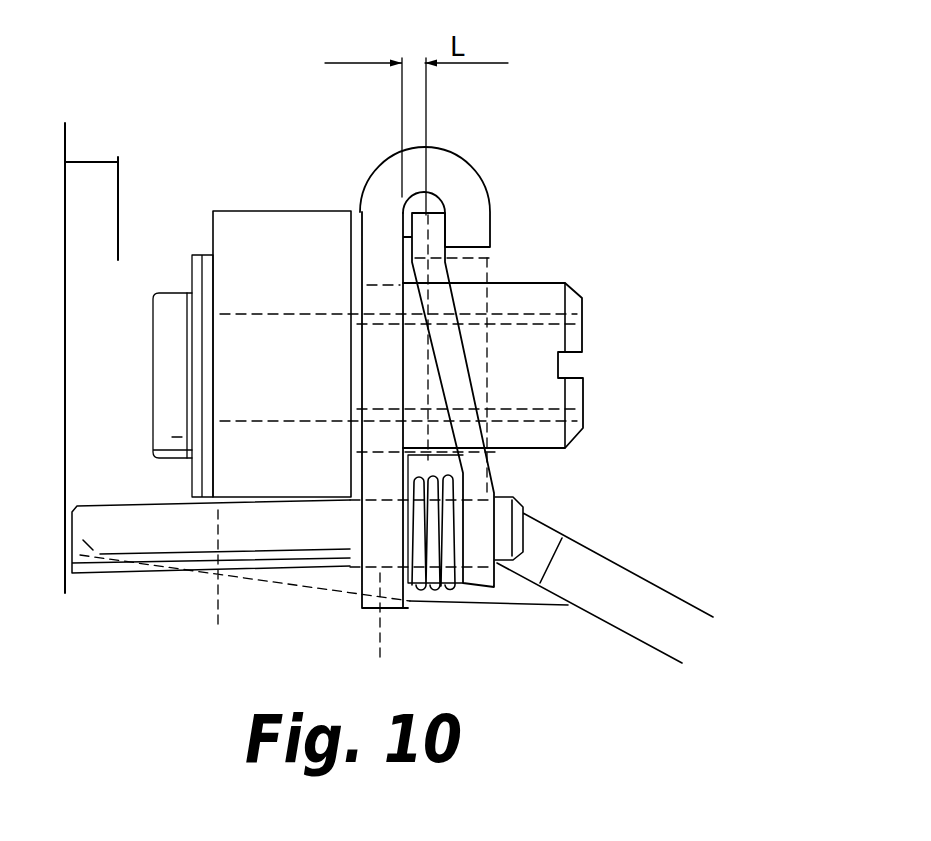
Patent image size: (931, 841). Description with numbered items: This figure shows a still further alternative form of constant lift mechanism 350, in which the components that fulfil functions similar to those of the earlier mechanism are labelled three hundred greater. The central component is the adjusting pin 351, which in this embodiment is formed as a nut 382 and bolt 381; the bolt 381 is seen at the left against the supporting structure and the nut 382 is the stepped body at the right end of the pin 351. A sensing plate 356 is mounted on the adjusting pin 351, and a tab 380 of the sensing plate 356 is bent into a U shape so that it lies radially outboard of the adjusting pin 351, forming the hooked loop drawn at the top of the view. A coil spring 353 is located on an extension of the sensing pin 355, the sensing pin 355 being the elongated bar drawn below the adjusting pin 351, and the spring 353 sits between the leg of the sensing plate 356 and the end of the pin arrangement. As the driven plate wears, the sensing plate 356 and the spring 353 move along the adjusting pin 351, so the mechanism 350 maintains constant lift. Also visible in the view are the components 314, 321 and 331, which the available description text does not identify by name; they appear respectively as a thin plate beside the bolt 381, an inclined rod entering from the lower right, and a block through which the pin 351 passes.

The mounting plate 314 is at (195, 253).
The actuating rod 321 is at (607, 597).
The housing block 331 is at (290, 268).
The constant lift mechanism 350 is at (583, 263).
The adjusting pin 351 is at (592, 392).
The coil spring 353 is at (437, 577).
The sensing pin 355 is at (157, 547).
The sensing plate 356 is at (382, 182).
The tab 380 is at (442, 165).
The bolt 381 is at (163, 335).
The nut 382 is at (572, 333).